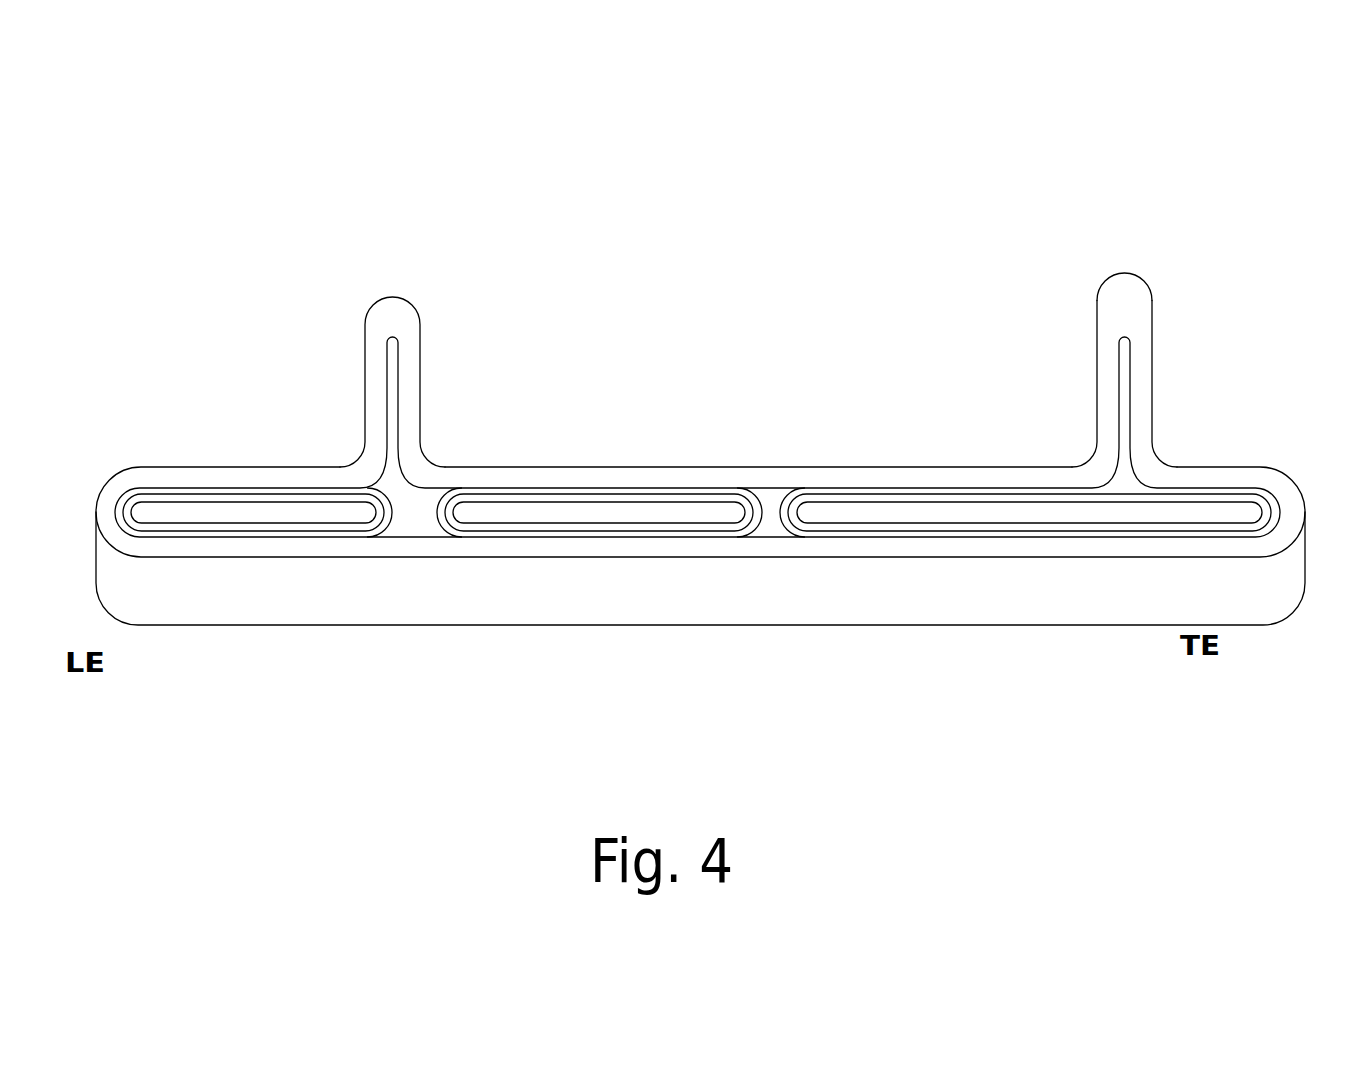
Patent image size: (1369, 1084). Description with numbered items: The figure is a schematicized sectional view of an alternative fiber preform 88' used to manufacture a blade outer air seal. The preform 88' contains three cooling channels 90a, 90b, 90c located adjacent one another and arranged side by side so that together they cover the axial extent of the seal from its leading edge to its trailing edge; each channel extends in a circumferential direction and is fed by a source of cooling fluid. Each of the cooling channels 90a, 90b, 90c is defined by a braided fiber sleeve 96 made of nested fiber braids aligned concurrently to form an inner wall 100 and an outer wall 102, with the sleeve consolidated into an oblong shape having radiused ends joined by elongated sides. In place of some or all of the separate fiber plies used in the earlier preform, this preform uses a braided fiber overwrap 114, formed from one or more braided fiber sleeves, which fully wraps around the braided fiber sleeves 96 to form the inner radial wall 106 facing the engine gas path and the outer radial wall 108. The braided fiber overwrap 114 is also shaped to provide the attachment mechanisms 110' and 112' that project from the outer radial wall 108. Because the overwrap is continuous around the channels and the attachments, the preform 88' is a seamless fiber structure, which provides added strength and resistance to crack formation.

The fiber preform 88' is at (718, 436).
The cooling channel 90a is at (337, 509).
The cooling channel 90b is at (509, 508).
The cooling channel 90c is at (903, 513).
The braided fiber sleeve 96 is at (1205, 495).
The inner wall 100 is at (594, 505).
The outer wall 102 is at (655, 486).
The inner radial wall 106 is at (920, 595).
The outer radial wall 108 is at (750, 467).
The attachment mechanism 110' is at (422, 382).
The attachment mechanism 112' is at (1172, 351).
The braided fiber overwrap 114 is at (1135, 274).